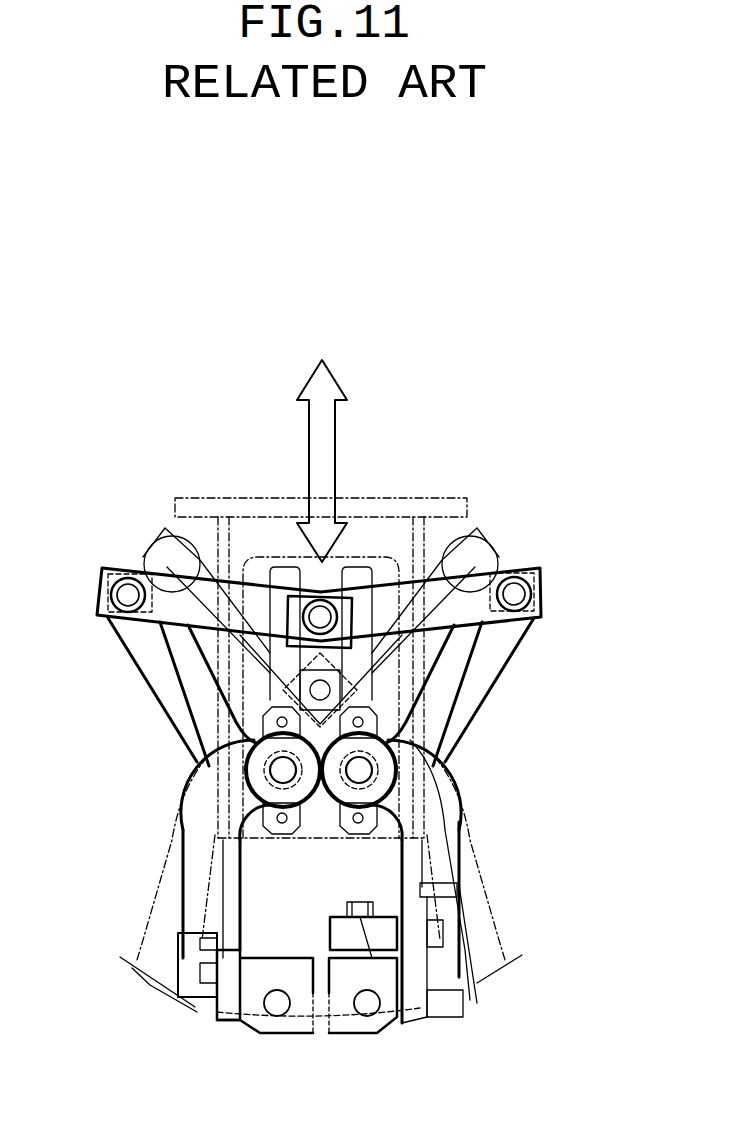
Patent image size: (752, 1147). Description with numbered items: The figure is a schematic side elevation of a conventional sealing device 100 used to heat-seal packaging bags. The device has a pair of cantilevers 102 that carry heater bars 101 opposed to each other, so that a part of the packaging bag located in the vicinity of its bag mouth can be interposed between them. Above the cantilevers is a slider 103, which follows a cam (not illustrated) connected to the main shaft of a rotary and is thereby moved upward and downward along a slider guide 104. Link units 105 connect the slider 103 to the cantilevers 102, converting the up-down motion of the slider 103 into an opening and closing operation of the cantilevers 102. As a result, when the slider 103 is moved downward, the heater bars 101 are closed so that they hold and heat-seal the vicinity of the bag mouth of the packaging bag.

The sealing device 100 is at (160, 476).
The heater bars 101 is at (297, 1020).
The cantilevers 102 is at (207, 833).
The slider 103 is at (320, 615).
The slider guide 104 is at (284, 577).
The link units 105 is at (112, 578).